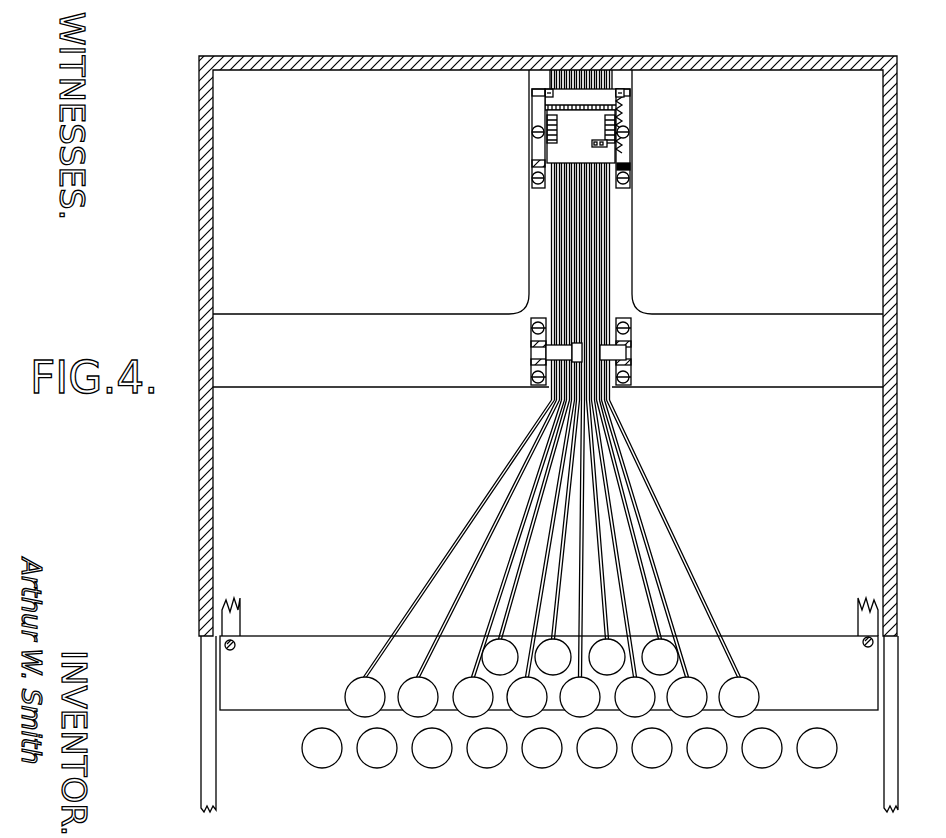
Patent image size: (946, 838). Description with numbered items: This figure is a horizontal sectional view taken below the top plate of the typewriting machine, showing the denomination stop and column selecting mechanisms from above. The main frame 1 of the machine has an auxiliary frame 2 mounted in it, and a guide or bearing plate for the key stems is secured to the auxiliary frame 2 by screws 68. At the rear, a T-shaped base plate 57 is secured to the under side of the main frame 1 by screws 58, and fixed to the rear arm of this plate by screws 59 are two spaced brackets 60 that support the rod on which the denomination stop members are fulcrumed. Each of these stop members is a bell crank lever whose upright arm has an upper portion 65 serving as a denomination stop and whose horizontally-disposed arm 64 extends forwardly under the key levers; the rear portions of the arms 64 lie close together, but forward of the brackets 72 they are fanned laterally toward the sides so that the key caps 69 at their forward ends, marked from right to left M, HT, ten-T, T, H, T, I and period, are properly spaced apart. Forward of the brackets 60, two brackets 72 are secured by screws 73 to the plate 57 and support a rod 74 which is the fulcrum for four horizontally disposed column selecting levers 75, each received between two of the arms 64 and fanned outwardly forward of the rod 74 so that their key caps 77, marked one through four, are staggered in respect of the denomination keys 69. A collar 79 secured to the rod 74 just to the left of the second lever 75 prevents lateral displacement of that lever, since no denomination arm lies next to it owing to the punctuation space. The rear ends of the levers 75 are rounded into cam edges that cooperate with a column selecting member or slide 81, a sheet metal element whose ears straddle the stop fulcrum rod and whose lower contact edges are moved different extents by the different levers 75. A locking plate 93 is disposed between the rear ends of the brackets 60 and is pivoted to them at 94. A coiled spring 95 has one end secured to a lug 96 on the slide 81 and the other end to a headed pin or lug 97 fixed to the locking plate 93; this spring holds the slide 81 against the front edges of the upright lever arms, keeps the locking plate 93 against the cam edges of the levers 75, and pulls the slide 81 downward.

The main frame 1 is at (215, 776).
The auxiliary frame 2 is at (240, 618).
The T-shaped base plate 57 is at (292, 318).
The screws 58 is at (540, 62).
The screws 59 is at (534, 133).
The brackets 60 is at (533, 112).
The horizontally-disposed arms 64 is at (471, 523).
The denomination stop 65 is at (602, 88).
The screws 68 is at (232, 650).
The key cap 69 is at (470, 714).
The brackets 72 is at (629, 353).
The screws 73 is at (535, 330).
The rod 74 is at (532, 353).
The column selecting levers 75 is at (626, 498).
The key caps 77 is at (481, 657).
The collar 79 is at (578, 346).
The column selecting member or slide 81 is at (581, 136).
The locking plate 93 is at (578, 96).
The pivot 94 is at (545, 93).
The coiled spring 95 is at (624, 110).
The lug 96 is at (610, 145).
The headed pin or lug 97 is at (624, 97).